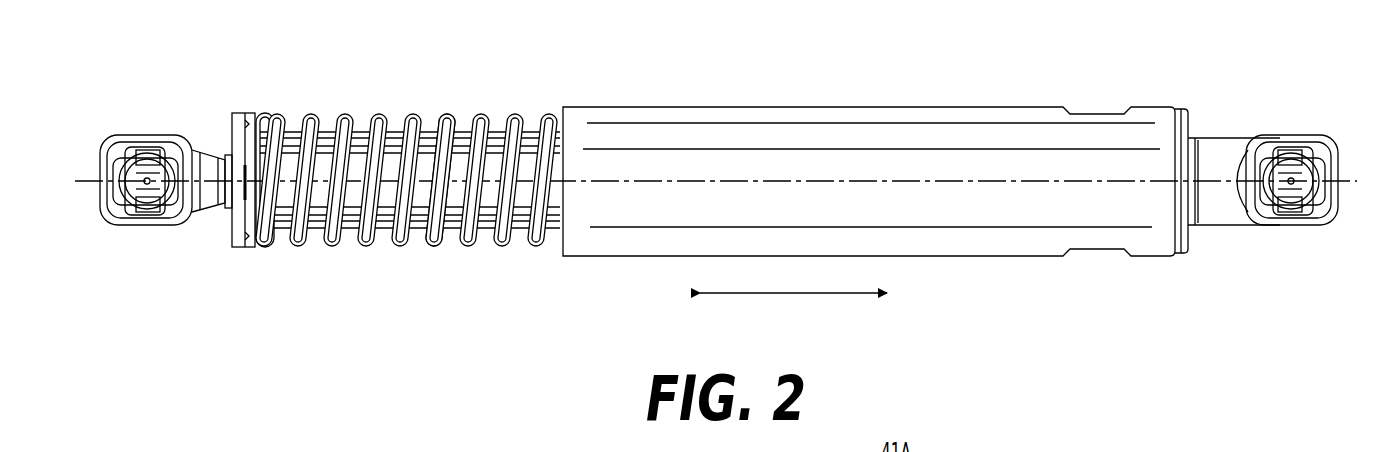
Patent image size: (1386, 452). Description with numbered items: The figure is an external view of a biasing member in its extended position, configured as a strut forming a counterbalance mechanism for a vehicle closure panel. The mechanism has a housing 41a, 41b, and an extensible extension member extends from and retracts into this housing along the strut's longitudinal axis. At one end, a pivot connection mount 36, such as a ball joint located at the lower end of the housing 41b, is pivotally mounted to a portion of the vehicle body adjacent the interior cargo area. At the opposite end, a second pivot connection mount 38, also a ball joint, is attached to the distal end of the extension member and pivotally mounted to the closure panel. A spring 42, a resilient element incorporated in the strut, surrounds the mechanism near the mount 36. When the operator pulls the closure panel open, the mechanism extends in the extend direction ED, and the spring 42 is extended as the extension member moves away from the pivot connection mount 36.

The pivot connection mount 36 is at (150, 225).
The second pivot connection mount 38 is at (1293, 145).
The housing 41a is at (984, 80).
The housing 41b is at (468, 120).
The spring 42 is at (386, 112).
The extend direction ED is at (798, 293).